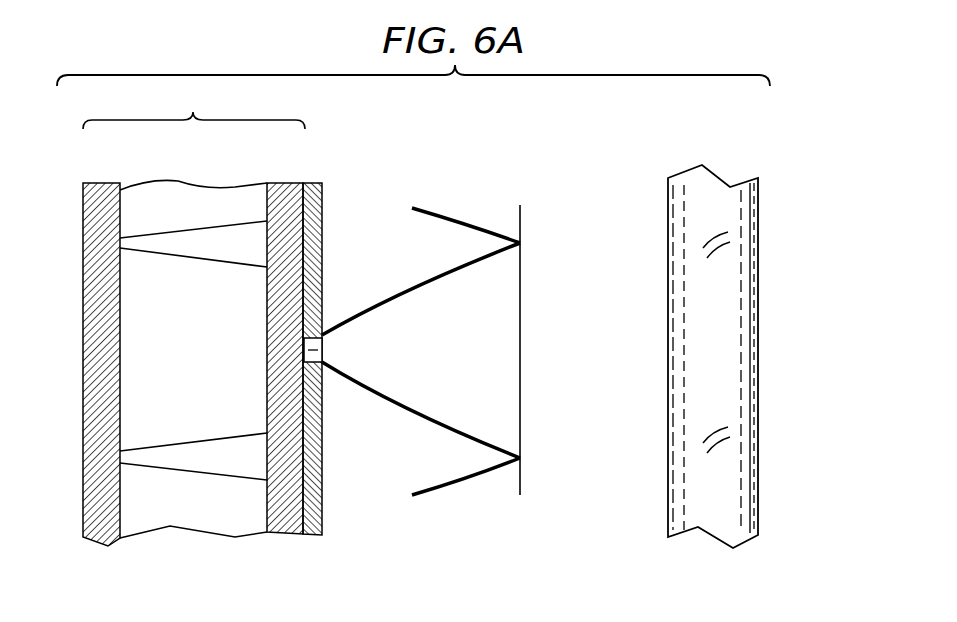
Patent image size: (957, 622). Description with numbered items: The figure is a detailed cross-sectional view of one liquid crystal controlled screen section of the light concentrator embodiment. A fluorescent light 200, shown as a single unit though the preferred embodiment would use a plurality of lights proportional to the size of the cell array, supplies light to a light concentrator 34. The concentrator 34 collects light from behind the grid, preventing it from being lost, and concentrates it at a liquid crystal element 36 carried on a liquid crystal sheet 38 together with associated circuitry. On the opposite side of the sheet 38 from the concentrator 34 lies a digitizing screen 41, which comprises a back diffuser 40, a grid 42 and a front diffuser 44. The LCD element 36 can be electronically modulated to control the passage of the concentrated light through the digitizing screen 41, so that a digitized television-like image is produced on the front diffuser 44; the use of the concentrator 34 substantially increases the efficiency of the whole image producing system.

The light concentrator 34 is at (434, 268).
The liquid crystal element 36 is at (318, 352).
The liquid crystal sheet 38 is at (313, 186).
The back diffuser 40 is at (280, 188).
The digitizing screen 41 is at (194, 109).
The grid 42 is at (200, 232).
The front diffuser 44 is at (103, 190).
The fluorescent light 200 is at (738, 297).